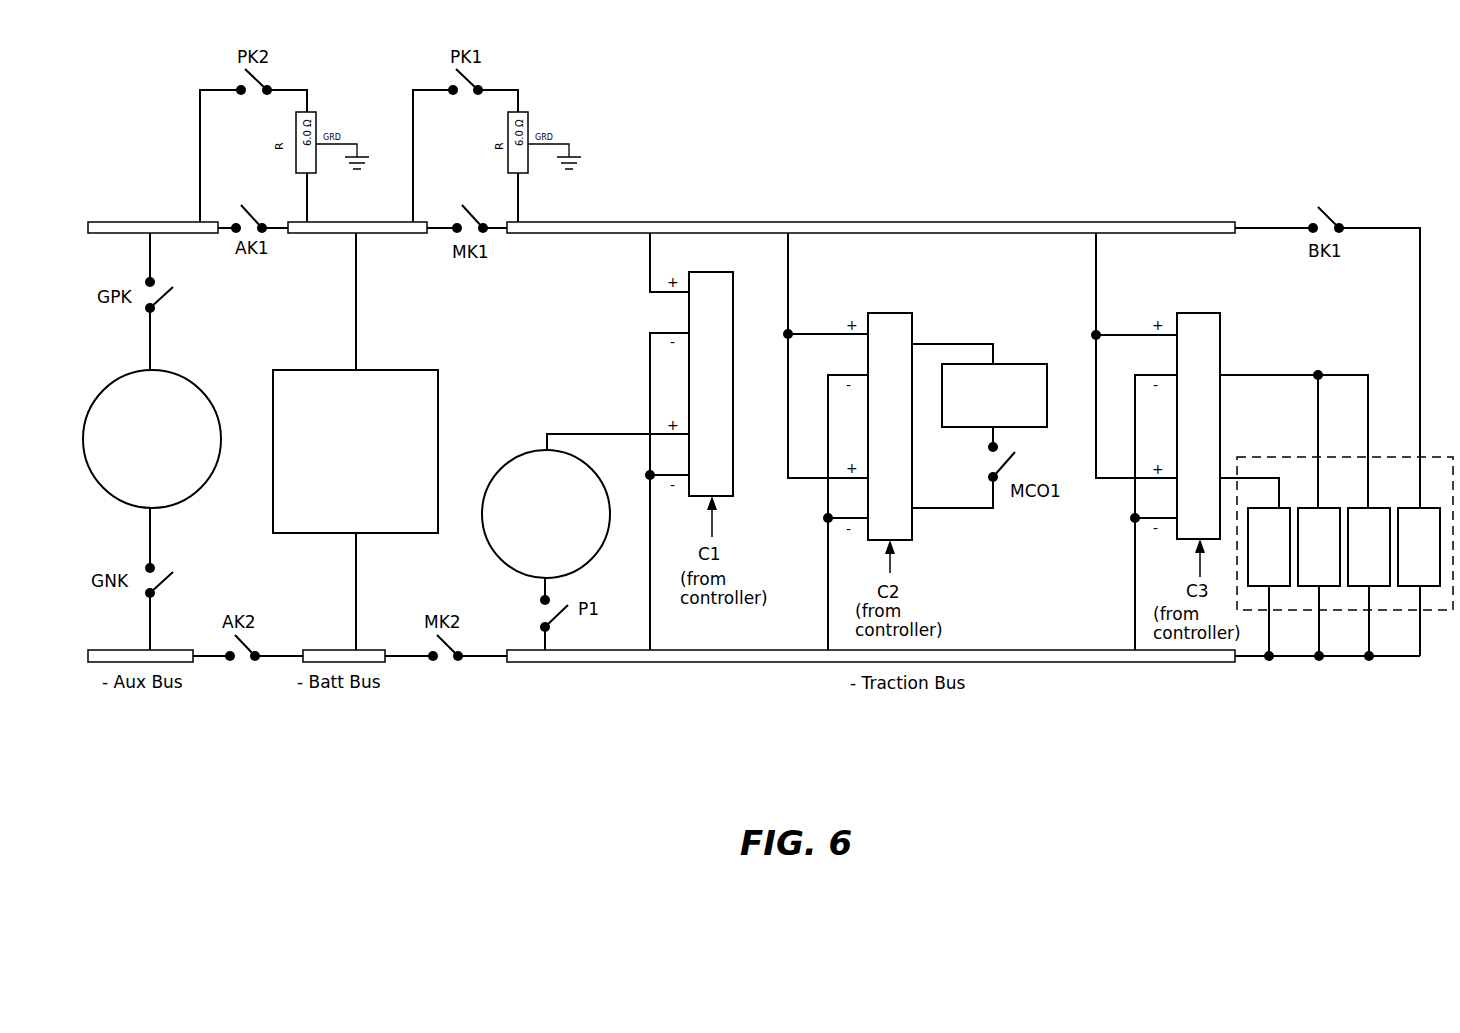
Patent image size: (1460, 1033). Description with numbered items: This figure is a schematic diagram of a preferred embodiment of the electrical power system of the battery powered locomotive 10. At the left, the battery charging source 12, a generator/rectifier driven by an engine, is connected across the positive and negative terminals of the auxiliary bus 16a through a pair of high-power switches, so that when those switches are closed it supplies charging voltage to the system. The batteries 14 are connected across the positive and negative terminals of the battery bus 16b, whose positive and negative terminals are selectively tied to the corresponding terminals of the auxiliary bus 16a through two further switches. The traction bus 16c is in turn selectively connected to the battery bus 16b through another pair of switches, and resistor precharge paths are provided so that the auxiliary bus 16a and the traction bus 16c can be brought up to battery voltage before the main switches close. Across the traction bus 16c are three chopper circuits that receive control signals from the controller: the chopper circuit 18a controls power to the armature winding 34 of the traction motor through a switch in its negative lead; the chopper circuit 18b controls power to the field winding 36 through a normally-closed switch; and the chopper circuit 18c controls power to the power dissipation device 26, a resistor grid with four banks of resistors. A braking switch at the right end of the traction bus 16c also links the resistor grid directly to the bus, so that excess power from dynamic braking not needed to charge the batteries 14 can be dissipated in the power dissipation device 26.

The locomotive 10 is at (797, 158).
The battery charging source 12 is at (183, 375).
The batteries 14 is at (425, 370).
The auxiliary bus 16a is at (177, 230).
The battery bus 16b is at (368, 230).
The traction bus 16c is at (668, 222).
The chopper circuit 18a is at (733, 288).
The chopper circuit 18b is at (900, 313).
The chopper circuit 18c is at (1197, 313).
The power dissipation device 26 is at (1287, 457).
The armature winding 34 is at (517, 458).
The field winding 36 is at (1030, 364).